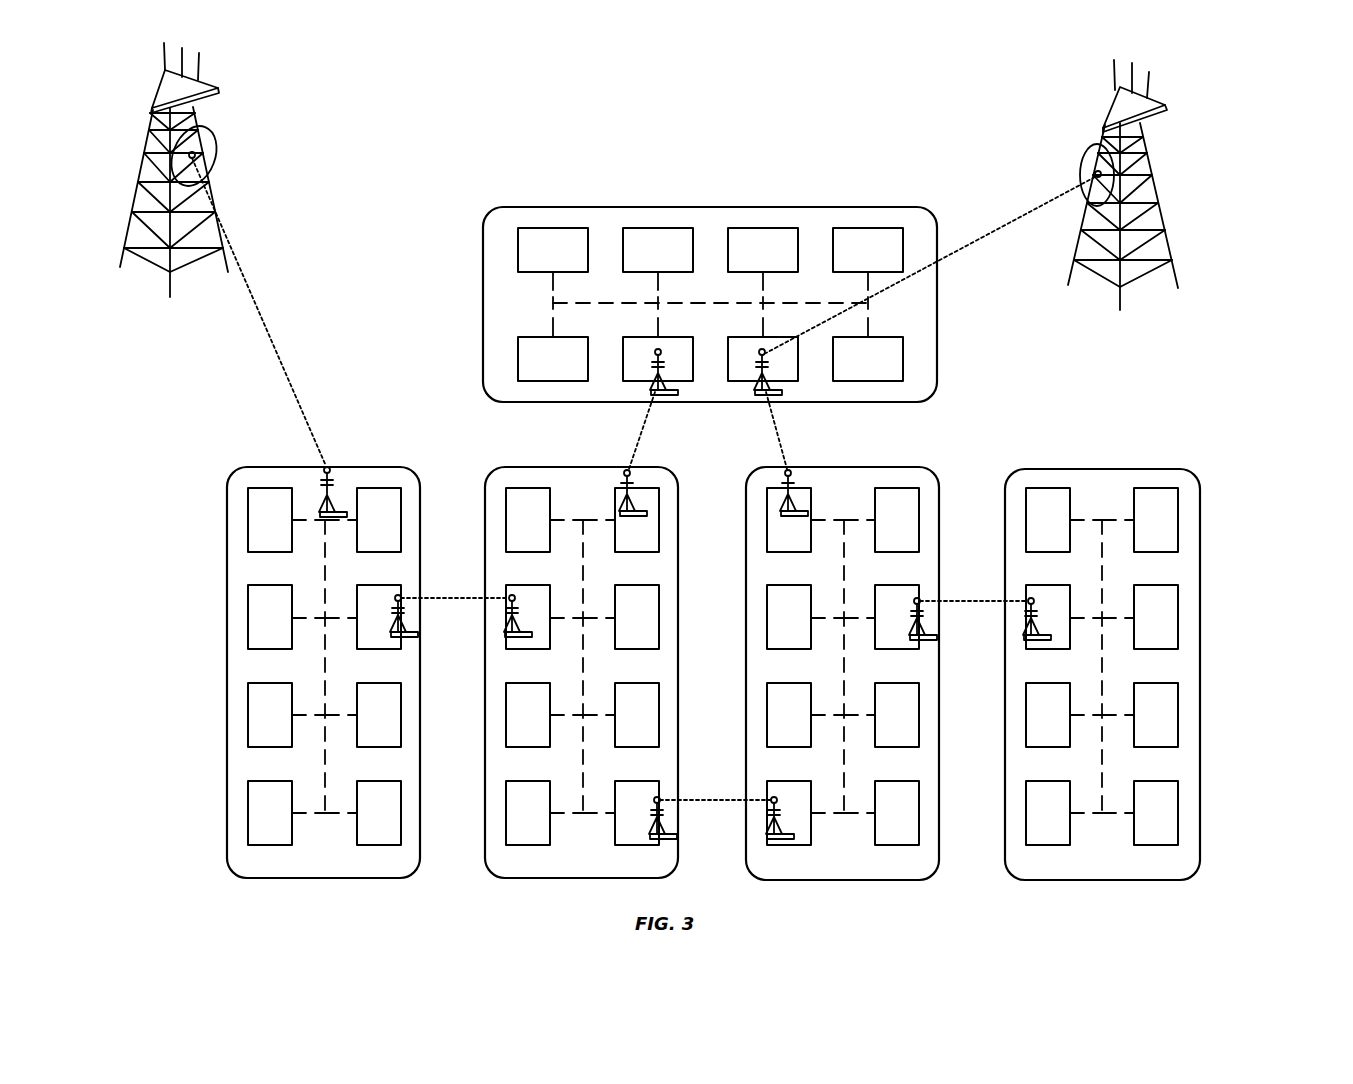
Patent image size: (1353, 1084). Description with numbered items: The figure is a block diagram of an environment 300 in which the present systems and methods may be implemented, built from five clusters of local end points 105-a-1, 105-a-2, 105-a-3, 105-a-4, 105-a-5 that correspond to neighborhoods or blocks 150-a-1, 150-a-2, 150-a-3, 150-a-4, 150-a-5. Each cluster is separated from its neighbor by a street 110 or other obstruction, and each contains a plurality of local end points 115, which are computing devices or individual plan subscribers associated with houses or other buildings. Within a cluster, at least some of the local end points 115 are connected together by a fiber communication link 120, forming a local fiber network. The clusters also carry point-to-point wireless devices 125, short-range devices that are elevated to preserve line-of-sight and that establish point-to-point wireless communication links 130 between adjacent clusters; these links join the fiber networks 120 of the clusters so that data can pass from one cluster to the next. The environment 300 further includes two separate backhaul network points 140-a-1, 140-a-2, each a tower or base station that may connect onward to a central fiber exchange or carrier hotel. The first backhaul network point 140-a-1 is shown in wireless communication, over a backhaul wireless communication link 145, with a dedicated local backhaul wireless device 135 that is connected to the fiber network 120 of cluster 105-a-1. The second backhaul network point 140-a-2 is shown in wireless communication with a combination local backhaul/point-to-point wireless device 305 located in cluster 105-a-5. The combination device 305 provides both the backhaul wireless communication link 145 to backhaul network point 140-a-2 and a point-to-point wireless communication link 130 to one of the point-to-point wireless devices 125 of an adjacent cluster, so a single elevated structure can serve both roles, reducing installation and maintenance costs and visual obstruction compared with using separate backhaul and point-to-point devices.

The environment 300 is at (549, 146).
The cluster of local end points 105-a-1 is at (226, 668).
The cluster of local end points 105-a-2 is at (488, 862).
The cluster of local end points 105-a-3 is at (937, 871).
The cluster of local end points 105-a-4 is at (1178, 768).
The cluster of local end points 105-a-5 is at (506, 282).
The street 110 is at (726, 447).
The local end point 115 is at (903, 378).
The fiber communication link 120 is at (868, 318).
The point-to-point wireless device 125 is at (650, 392).
The point-to-point wireless communication link 130 is at (437, 597).
The local backhaul wireless device 135 is at (335, 462).
The backhaul network point 140-a-1 is at (217, 91).
The backhaul network point 140-a-2 is at (1115, 90).
The backhaul wireless communication link 145 is at (262, 311).
The neighborhood or block 150-a-1 is at (227, 512).
The neighborhood or block 150-a-2 is at (543, 878).
The neighborhood or block 150-a-3 is at (757, 882).
The neighborhood or block 150-a-4 is at (1165, 882).
The neighborhood or block 150-a-5 is at (823, 205).
The combination local backhaul/point-to-point wireless device 305 is at (785, 392).